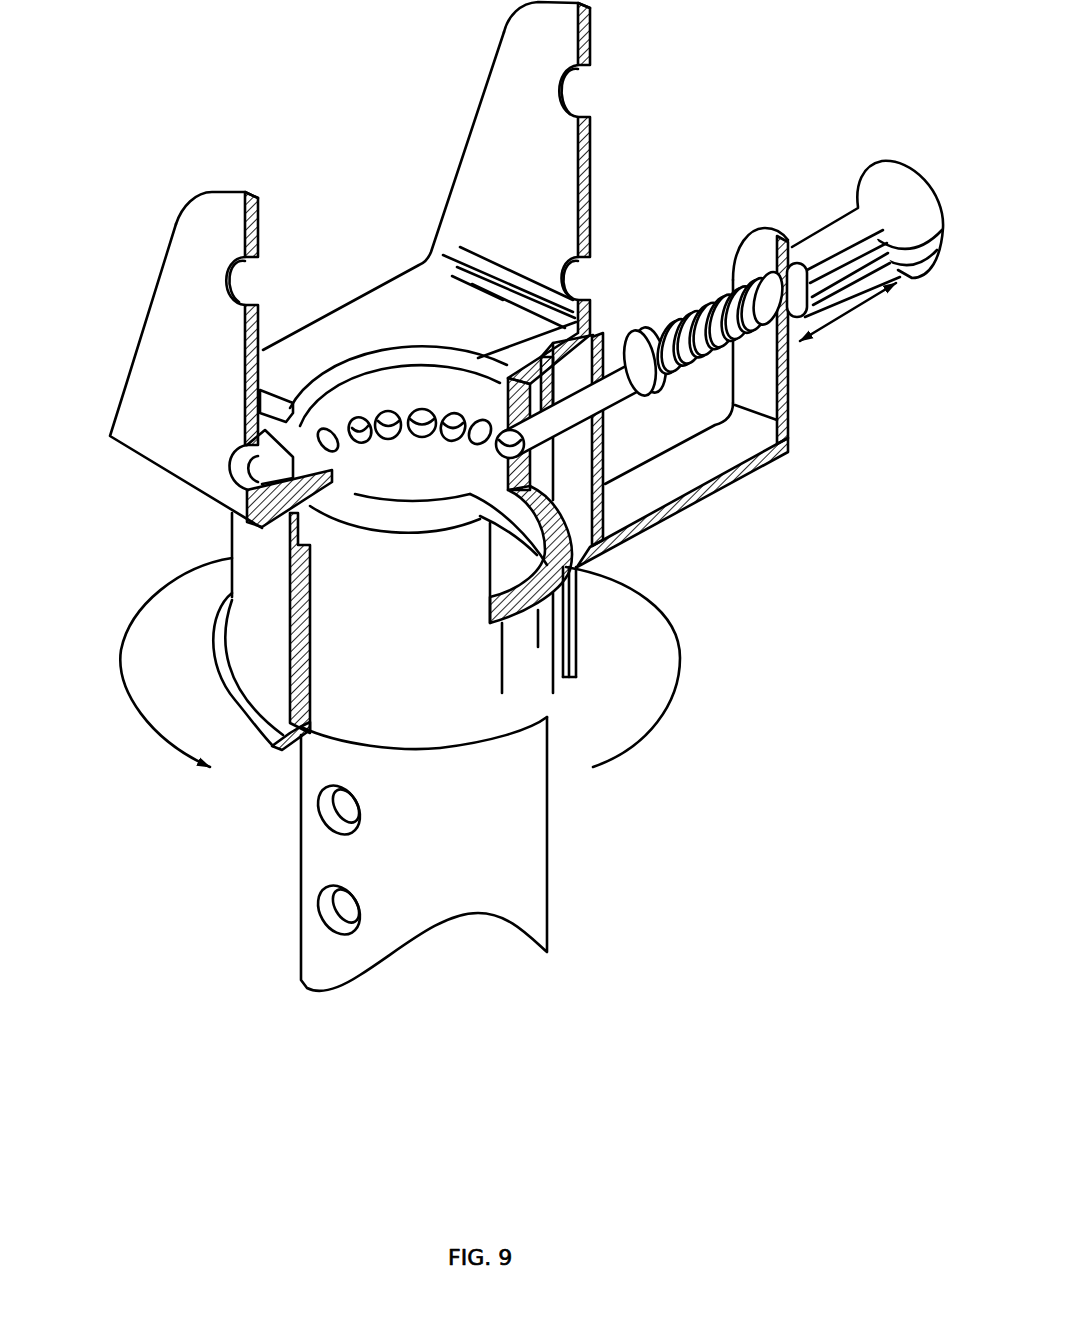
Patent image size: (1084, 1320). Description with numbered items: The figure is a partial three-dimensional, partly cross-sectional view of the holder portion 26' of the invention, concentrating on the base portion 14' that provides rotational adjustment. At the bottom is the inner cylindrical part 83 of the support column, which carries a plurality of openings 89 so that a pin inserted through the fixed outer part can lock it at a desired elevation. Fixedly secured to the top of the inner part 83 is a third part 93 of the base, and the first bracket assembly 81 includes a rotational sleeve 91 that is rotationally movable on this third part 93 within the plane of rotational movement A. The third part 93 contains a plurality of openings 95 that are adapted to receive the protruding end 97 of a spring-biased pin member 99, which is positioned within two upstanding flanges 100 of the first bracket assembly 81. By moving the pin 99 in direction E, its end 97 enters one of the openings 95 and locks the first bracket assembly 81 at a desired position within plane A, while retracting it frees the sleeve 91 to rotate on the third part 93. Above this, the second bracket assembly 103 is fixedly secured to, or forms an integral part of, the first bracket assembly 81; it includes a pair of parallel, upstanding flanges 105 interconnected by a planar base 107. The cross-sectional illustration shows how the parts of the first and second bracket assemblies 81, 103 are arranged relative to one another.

The holder assembly 26' is at (508, 496).
The base portion 14' is at (378, 779).
The inner cylindrical part 83 is at (433, 779).
The openings 89 is at (320, 820).
The third part 93 is at (528, 680).
The rotational sleeve 91 is at (258, 548).
The openings 95 is at (453, 410).
The upstanding flanges 105 is at (187, 270).
The second bracket assembly 103 is at (463, 172).
The planar base 107 is at (427, 275).
The first bracket assembly 81 is at (717, 411).
The upstanding flanges 100 is at (757, 372).
The protruding end 97 is at (594, 399).
The spring-biased pin member 99 is at (697, 283).
The plane of rotational movement A is at (376, 662).
The direction of pin movement E is at (848, 312).